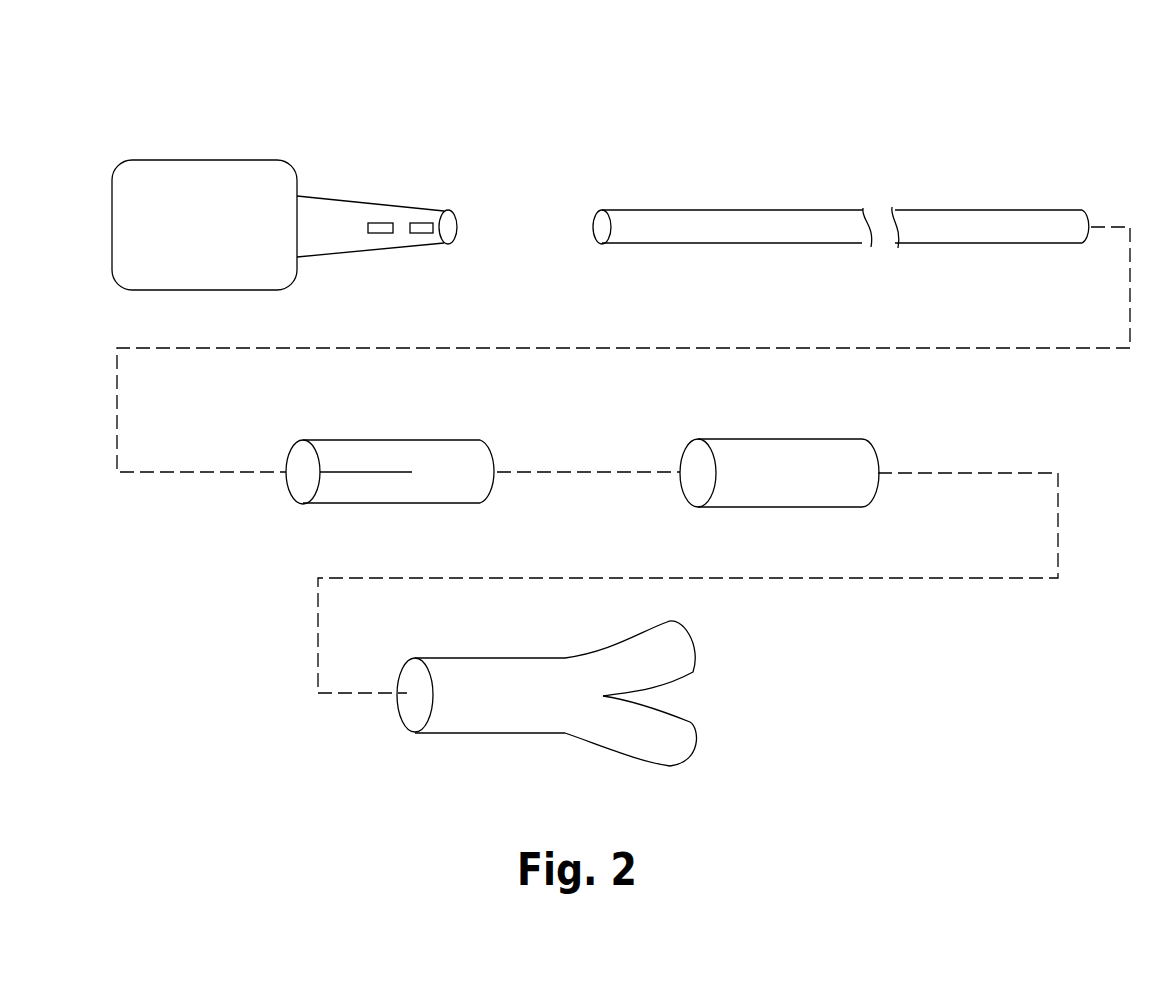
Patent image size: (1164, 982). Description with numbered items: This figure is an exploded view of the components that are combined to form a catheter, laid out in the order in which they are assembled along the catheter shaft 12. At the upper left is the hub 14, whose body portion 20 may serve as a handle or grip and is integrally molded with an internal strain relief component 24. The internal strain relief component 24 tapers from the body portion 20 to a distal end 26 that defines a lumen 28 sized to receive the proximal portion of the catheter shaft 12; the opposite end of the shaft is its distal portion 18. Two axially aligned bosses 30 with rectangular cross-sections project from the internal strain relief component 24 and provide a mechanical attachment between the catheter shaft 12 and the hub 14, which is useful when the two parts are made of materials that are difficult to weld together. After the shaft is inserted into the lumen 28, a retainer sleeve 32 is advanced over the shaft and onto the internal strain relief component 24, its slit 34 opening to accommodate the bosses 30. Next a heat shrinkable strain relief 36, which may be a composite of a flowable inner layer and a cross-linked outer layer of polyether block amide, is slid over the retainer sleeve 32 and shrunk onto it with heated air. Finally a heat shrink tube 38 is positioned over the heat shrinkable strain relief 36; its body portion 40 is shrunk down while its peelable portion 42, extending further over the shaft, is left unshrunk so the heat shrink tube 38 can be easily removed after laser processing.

The catheter shaft 12 is at (778, 218).
The hub 14 is at (333, 120).
The distal portion 18 is at (1048, 185).
The body portion 20 is at (192, 168).
The internal strain relief component 24 is at (327, 208).
The distal end 26 is at (441, 201).
The lumen 28 is at (450, 223).
The bosses 30 is at (380, 233).
The retainer sleeve 32 is at (398, 493).
The slit 34 is at (398, 470).
The heat shrinkable strain relief 36 is at (762, 447).
The heat shrink tube 38 is at (507, 722).
The body portion 40 is at (447, 742).
The peelable portion 42 is at (653, 765).